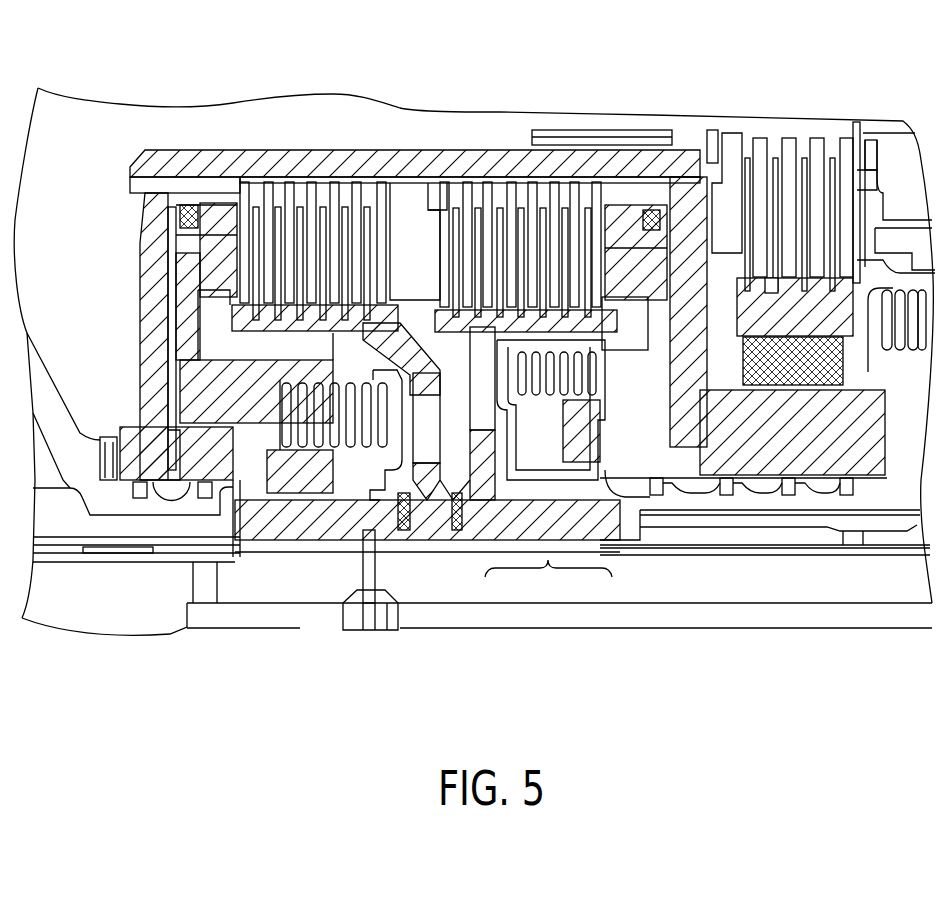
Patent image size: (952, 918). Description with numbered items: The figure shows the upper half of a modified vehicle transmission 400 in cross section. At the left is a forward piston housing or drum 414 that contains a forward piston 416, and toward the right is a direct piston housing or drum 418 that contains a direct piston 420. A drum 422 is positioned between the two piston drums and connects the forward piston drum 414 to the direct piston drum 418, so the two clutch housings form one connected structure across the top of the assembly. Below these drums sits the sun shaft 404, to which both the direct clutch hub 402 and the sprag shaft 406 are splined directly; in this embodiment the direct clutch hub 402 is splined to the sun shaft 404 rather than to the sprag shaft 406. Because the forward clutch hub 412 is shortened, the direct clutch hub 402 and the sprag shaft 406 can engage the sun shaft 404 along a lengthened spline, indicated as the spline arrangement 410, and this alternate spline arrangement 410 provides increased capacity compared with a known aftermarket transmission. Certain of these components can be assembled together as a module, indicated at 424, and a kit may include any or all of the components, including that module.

The transmission 400 is at (732, 102).
The direct clutch hub 402 is at (520, 520).
The sun shaft 404 is at (710, 545).
The sprag shaft 406 is at (705, 478).
The spline arrangement 410 is at (545, 505).
The forward clutch hub 412 is at (400, 515).
The forward piston housing 414 is at (160, 335).
The forward piston 416 is at (180, 280).
The direct piston housing 418 is at (695, 235).
The direct piston 420 is at (640, 270).
The drum 422 is at (410, 172).
The module 424 is at (240, 140).